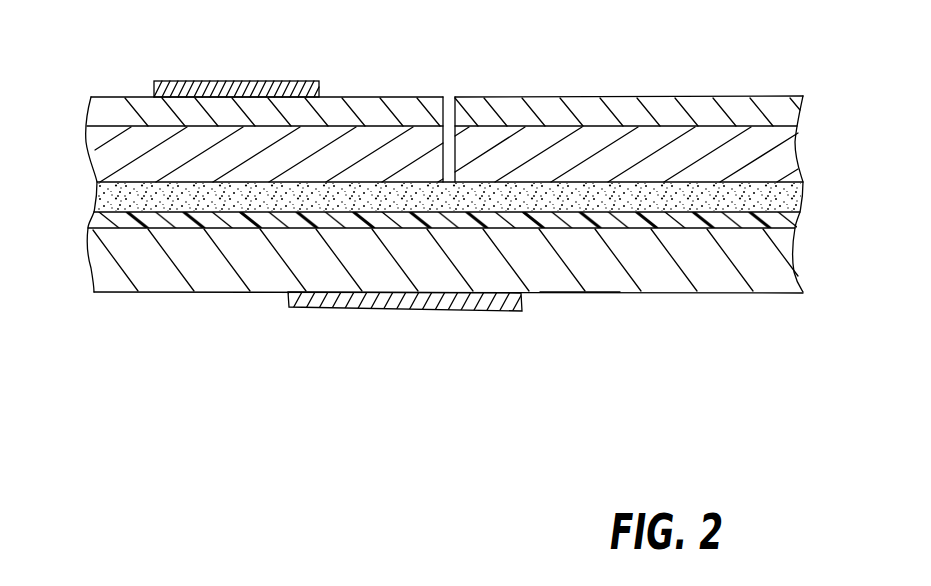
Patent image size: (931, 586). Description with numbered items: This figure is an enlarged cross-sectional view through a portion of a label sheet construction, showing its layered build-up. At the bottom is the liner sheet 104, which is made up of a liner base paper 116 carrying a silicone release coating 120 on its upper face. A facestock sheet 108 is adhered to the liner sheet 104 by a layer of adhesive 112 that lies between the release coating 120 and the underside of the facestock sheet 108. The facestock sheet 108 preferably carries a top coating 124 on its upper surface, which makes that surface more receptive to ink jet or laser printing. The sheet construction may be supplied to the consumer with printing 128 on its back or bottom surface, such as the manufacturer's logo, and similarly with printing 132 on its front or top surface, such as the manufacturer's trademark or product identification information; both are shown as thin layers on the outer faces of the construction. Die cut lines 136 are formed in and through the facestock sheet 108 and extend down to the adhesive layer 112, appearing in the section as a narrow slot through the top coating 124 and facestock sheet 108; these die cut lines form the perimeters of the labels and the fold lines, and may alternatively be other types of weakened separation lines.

The liner sheet 104 is at (787, 257).
The facestock sheet 108 is at (787, 156).
The adhesive layer 112 is at (805, 193).
The liner base paper 116 is at (577, 295).
The silicone release coating 120 is at (97, 220).
The top coating 124 is at (723, 97).
The printing on the back surface 128 is at (422, 310).
The printing on the front surface 132 is at (263, 81).
The die cut lines 136 is at (447, 112).